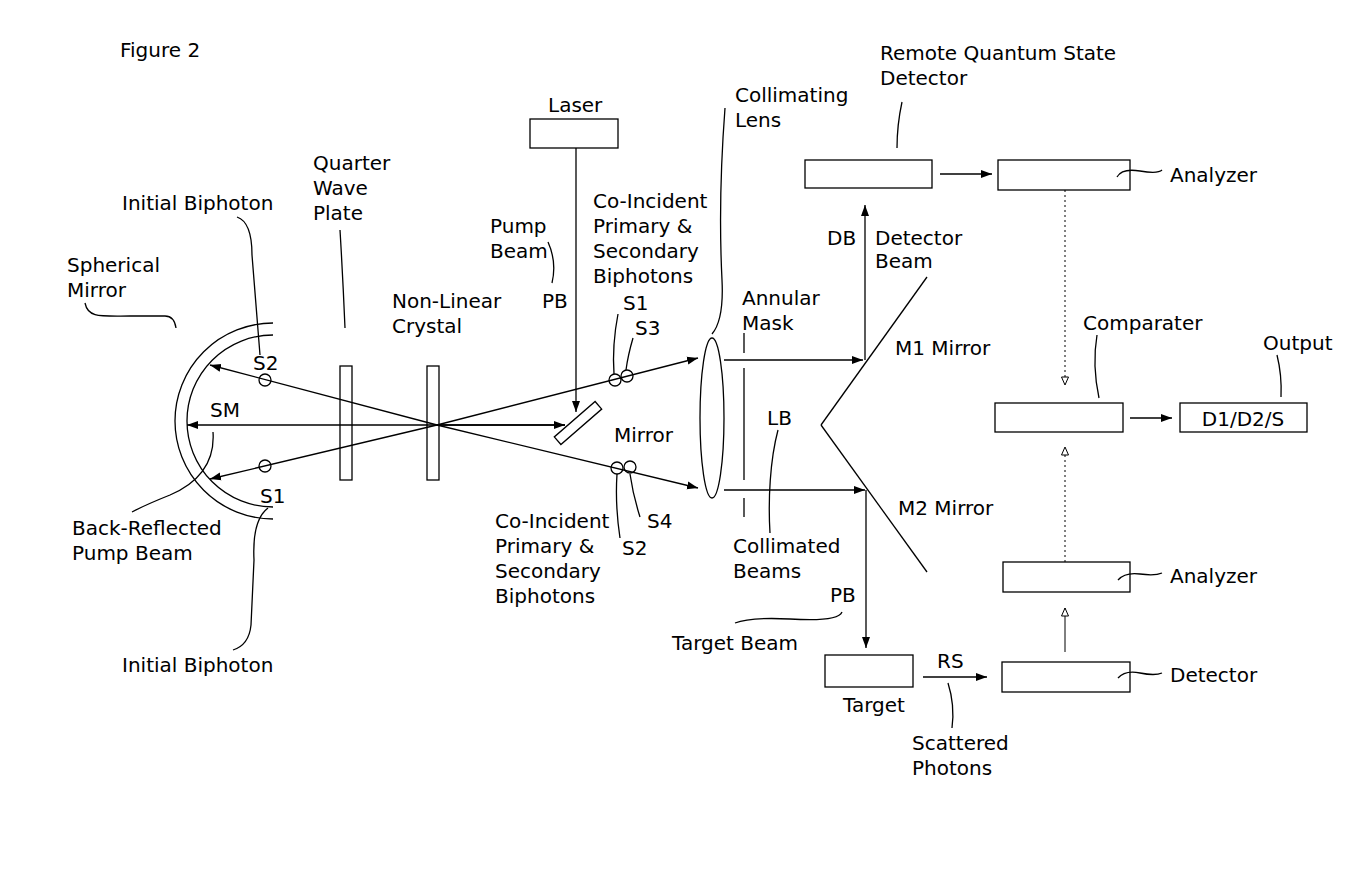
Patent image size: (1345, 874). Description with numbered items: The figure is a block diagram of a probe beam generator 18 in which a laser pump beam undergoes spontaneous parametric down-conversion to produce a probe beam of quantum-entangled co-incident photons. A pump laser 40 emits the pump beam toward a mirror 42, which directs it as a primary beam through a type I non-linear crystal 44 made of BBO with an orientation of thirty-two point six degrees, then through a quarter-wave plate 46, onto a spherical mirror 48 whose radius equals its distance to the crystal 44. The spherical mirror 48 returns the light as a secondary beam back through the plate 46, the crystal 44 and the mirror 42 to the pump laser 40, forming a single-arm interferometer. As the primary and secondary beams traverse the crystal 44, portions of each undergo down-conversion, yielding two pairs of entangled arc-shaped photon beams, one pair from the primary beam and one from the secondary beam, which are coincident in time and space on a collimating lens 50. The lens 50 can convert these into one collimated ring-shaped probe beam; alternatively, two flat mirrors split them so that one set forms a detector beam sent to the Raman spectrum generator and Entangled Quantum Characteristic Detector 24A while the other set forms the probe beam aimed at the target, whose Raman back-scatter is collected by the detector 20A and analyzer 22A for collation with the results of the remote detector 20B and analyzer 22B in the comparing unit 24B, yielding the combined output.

The probe beam generator 18 is at (869, 671).
The Detector 20A is at (1066, 677).
The Remote quantum state detector 20B is at (868, 174).
The Analyzer 22A is at (1066, 577).
The Analyzer 22B is at (1064, 175).
The Raman spectrum generator and Entangled Quantum Characteristic Detector 24A is at (1059, 417).
The Comparator 24B is at (1059, 417).
The pump laser 40 is at (574, 133).
The mirror 42 is at (582, 425).
The non-linear crystal 44 is at (437, 410).
The quarter-wave plate 46 is at (347, 410).
The spherical mirror 48 is at (221, 421).
The collimating lens 50 is at (713, 418).